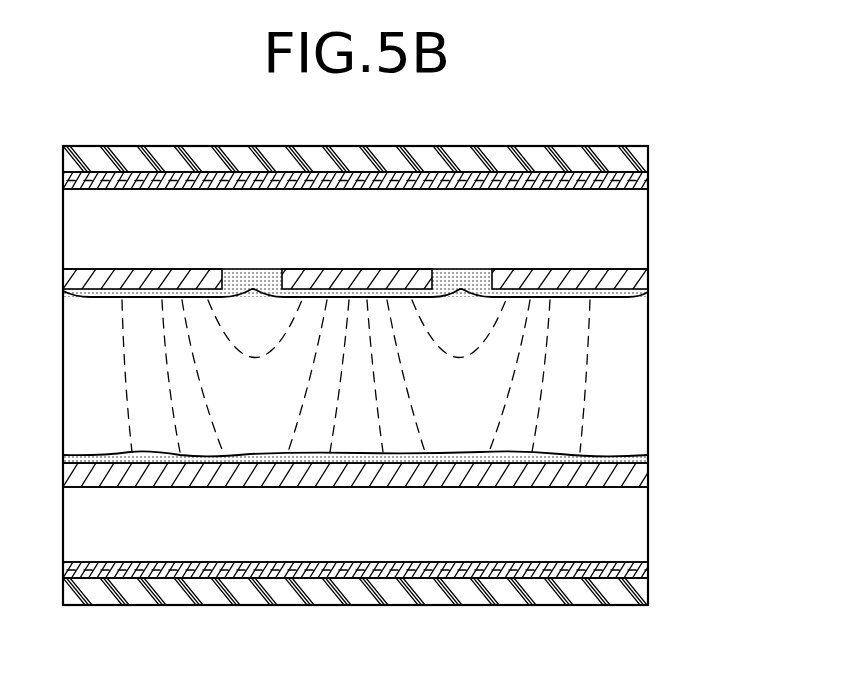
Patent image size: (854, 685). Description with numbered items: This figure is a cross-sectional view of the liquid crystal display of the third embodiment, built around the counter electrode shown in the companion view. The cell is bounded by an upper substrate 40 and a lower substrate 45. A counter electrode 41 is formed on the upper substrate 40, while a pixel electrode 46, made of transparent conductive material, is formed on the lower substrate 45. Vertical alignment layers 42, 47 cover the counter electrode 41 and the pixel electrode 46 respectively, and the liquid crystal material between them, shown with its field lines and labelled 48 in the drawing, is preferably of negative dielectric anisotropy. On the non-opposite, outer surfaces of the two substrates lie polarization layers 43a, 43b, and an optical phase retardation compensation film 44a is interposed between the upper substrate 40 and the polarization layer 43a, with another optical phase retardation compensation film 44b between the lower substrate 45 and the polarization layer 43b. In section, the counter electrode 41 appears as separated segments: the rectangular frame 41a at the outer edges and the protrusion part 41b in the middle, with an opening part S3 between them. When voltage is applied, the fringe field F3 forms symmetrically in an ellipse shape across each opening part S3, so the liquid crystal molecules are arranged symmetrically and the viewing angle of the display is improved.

The upper substrate 40 is at (648, 225).
The counter electrode 41 is at (398, 313).
The rectangular frame 41a is at (86, 292).
The protrusion part 41b is at (320, 289).
The vertical alignment layer 42 is at (648, 303).
The polarization layer 43a is at (648, 158).
The polarization layer 43b is at (648, 590).
The optical phase retardation compensation film 44a is at (648, 180).
The optical phase retardation compensation film 44b is at (648, 568).
The lower substrate 45 is at (648, 528).
The pixel electrode 46 is at (648, 478).
The vertical alignment layer 47 is at (646, 458).
The liquid crystal layer 48 is at (417, 371).
The opening part S3 is at (357, 346).
The fringe field F3 is at (375, 376).